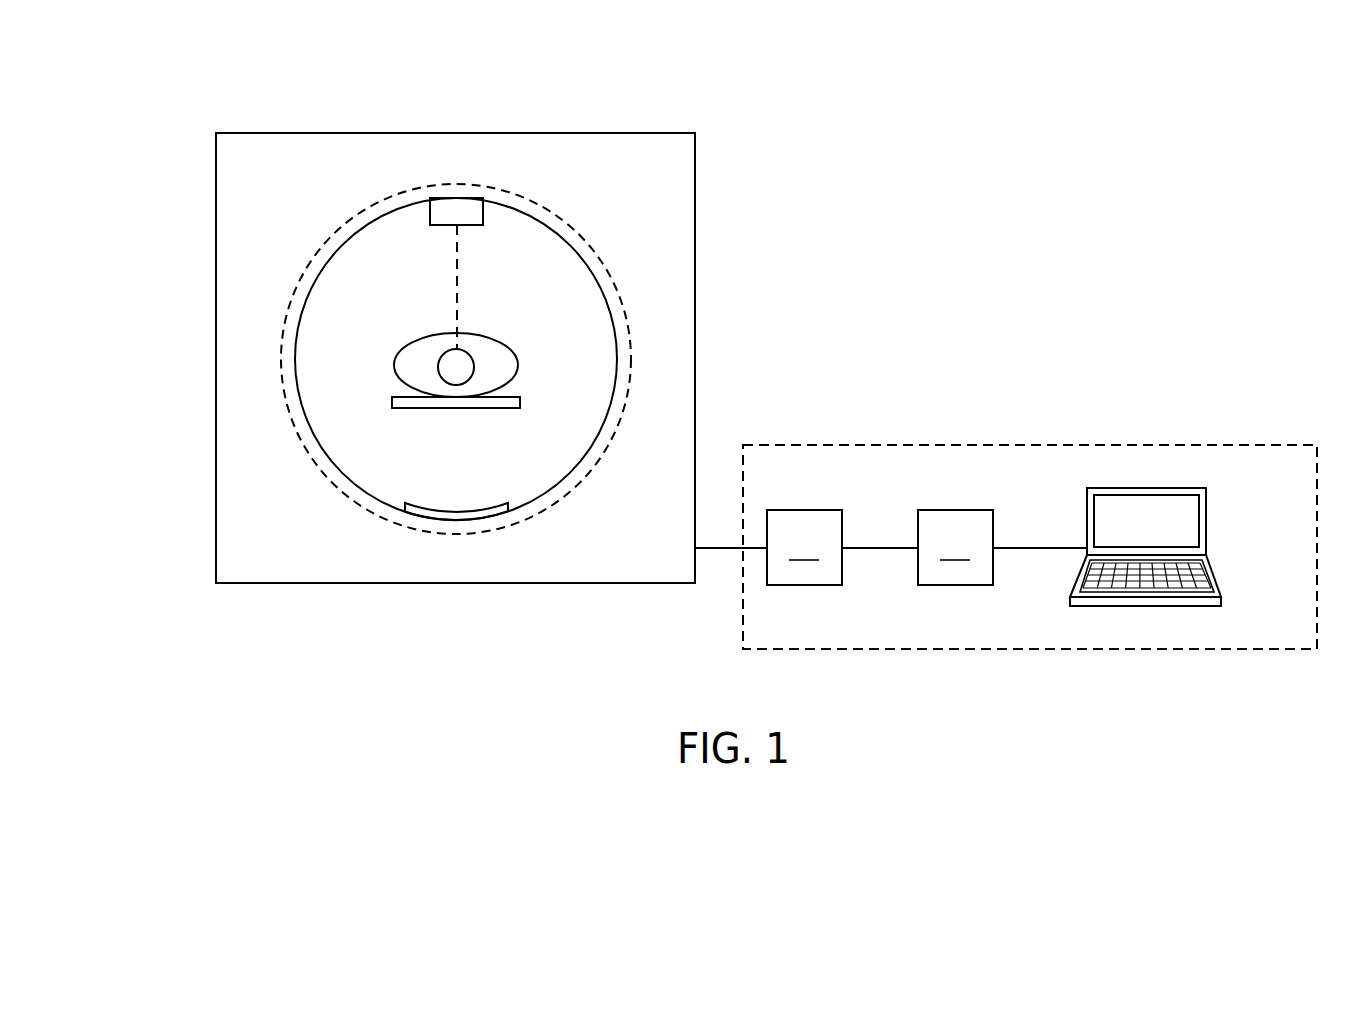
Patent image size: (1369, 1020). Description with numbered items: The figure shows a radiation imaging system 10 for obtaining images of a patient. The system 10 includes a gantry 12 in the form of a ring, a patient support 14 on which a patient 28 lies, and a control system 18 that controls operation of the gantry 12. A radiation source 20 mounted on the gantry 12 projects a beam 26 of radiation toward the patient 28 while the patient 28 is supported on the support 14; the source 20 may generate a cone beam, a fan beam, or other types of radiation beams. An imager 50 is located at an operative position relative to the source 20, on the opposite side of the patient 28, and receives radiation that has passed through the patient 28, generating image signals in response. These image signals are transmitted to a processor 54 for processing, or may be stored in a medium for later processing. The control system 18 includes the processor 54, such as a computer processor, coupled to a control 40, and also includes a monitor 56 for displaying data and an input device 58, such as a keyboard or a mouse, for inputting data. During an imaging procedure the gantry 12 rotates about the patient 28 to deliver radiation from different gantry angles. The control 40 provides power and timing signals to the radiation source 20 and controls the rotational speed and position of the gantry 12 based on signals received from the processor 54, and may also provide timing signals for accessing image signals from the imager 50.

The radiation imaging system 10 is at (890, 88).
The gantry 12 is at (320, 466).
The patient support 14 is at (520, 408).
The control system 18 is at (1063, 649).
The radiation source 20 is at (468, 225).
The beam 26 is at (458, 280).
The patient 28 is at (508, 367).
The control 40 is at (804, 547).
The imager 50 is at (405, 503).
The processor 54 is at (955, 547).
The monitor 56 is at (1206, 513).
The input device 58 is at (1222, 587).